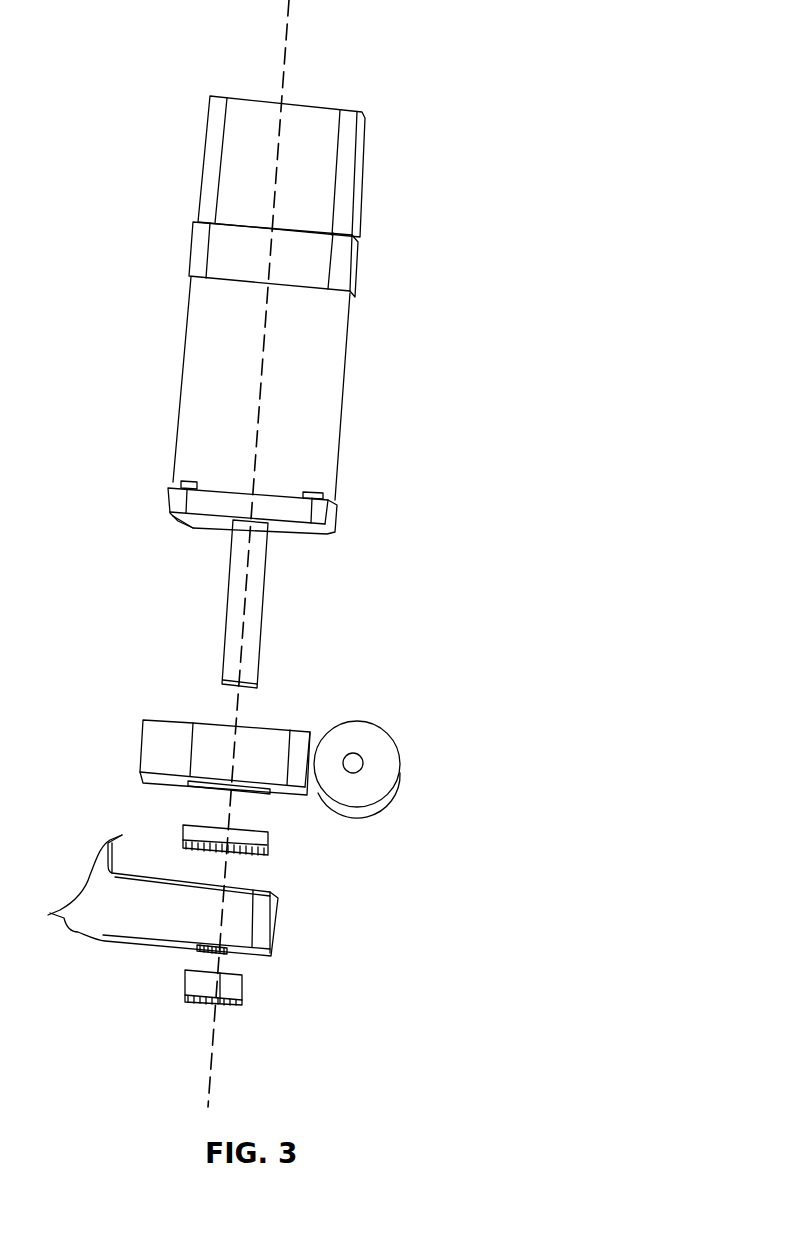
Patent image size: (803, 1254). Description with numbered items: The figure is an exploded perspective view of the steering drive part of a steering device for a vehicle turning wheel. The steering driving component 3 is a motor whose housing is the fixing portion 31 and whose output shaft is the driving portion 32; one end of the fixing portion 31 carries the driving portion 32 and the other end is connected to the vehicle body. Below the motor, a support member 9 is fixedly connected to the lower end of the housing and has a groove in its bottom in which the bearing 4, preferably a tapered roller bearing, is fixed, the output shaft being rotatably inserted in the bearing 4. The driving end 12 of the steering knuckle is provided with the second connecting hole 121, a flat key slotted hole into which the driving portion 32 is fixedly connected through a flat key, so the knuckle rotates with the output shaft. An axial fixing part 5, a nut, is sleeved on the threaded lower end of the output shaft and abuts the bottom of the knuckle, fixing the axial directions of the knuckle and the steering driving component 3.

The steering driving component 3 is at (247, 393).
The fixing portion 31 is at (328, 384).
The driving portion 32 is at (264, 591).
The support member 9 is at (284, 774).
The bearing 4 is at (273, 847).
The driving end 12 is at (210, 955).
The second connecting hole 121 is at (239, 961).
The axial fixing part 5 is at (238, 1002).